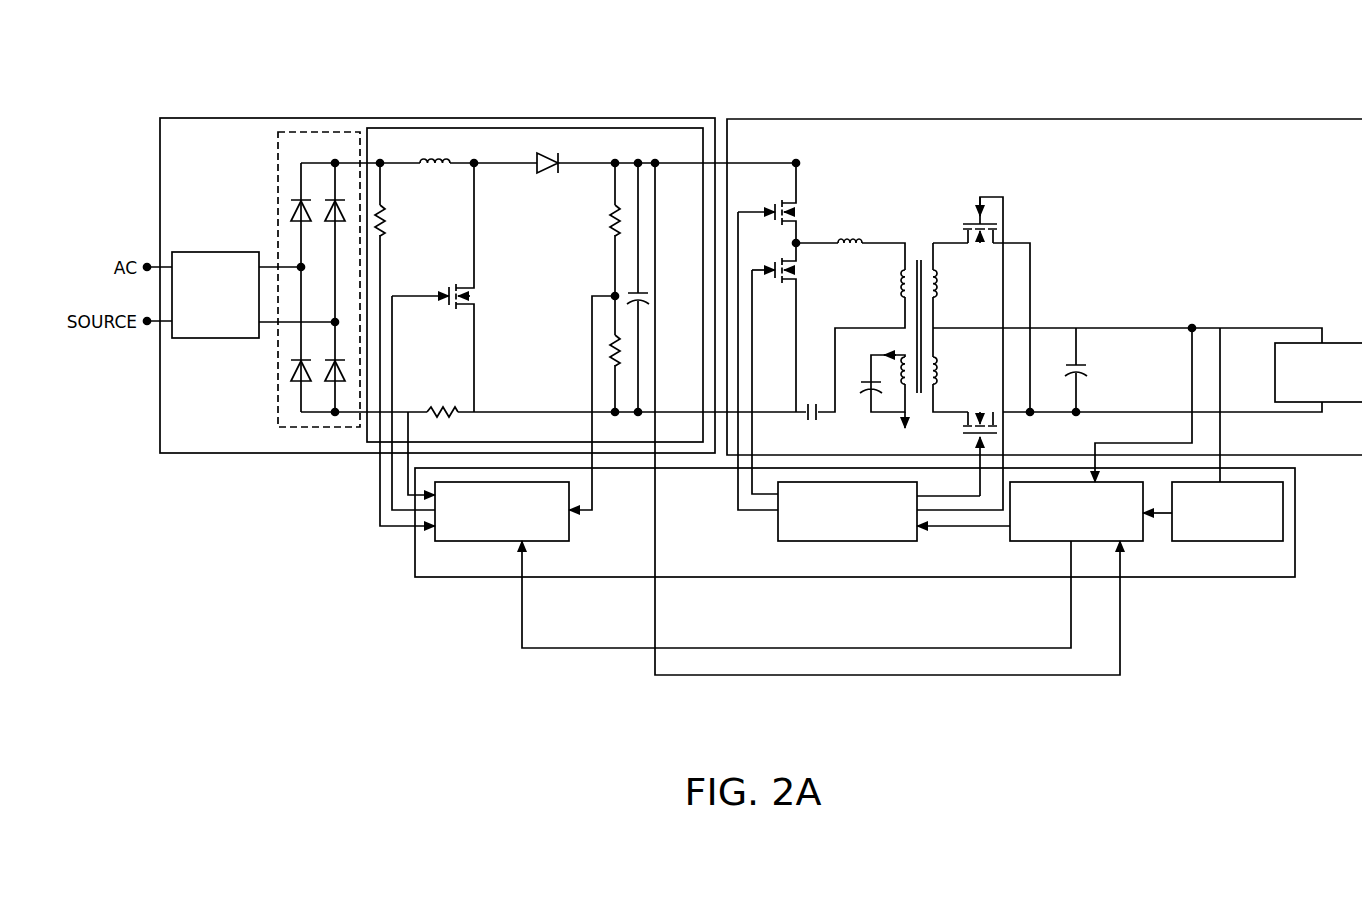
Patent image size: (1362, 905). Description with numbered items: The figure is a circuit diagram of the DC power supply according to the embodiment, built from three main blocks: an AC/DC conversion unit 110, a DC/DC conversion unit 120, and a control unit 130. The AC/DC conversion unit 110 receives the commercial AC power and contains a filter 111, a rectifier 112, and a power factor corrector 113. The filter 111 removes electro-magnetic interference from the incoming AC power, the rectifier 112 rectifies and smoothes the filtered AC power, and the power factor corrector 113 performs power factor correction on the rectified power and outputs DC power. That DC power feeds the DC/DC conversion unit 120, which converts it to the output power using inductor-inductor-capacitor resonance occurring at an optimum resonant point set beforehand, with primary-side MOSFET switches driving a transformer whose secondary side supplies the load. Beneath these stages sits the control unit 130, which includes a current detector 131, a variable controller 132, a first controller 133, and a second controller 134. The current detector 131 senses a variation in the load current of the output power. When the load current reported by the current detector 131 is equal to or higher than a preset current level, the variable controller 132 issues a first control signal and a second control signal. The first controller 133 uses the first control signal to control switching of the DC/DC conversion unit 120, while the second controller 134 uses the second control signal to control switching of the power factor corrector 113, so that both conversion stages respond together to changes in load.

The AC/DC conversion unit 110 is at (433, 117).
The filter 111 is at (205, 252).
The rectifier 112 is at (320, 427).
The power factor corrector 113 is at (602, 128).
The DC/DC conversion unit 120 is at (982, 119).
The control unit 130 is at (748, 577).
The current detector 131 is at (1218, 541).
The variable controller 132 is at (1093, 541).
The first controller 133 is at (840, 541).
The second controller 134 is at (462, 541).